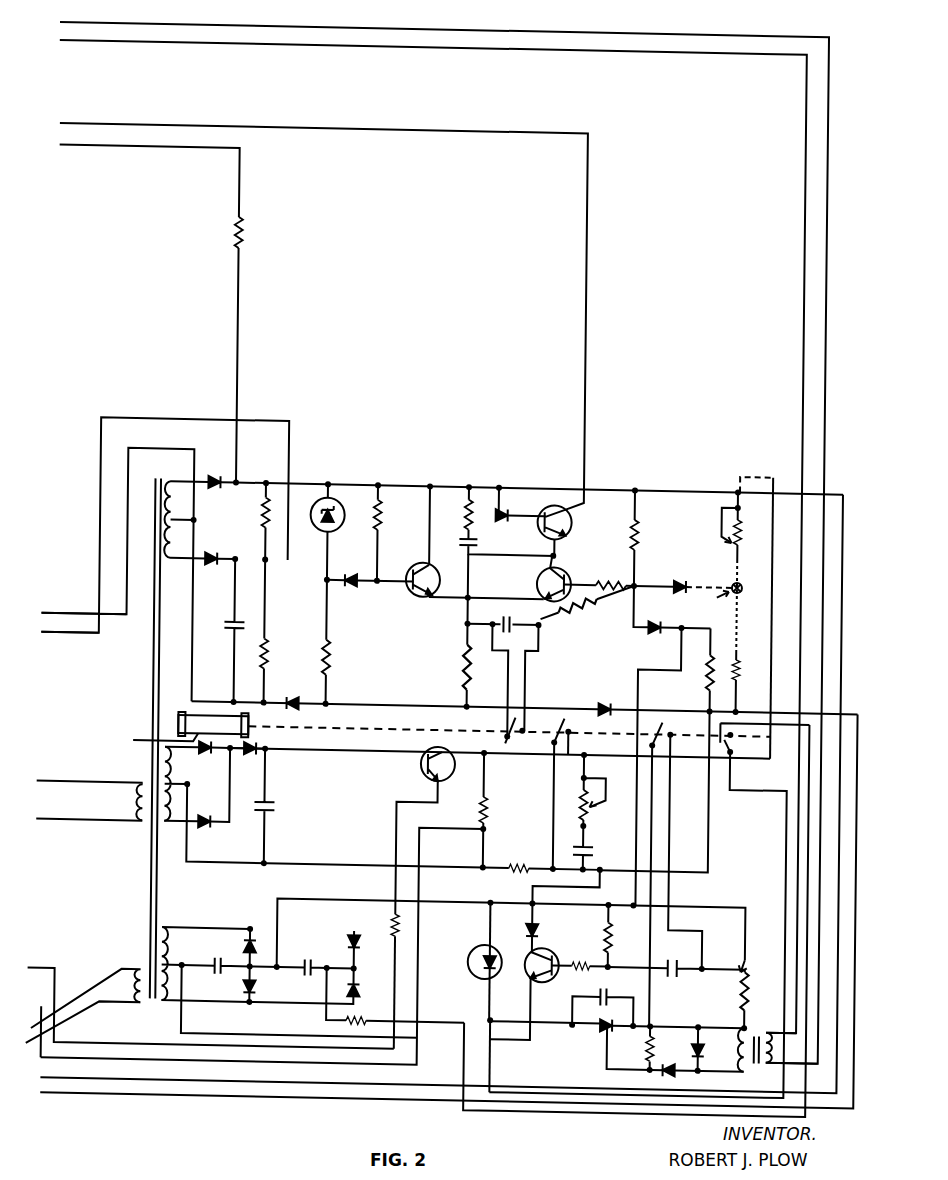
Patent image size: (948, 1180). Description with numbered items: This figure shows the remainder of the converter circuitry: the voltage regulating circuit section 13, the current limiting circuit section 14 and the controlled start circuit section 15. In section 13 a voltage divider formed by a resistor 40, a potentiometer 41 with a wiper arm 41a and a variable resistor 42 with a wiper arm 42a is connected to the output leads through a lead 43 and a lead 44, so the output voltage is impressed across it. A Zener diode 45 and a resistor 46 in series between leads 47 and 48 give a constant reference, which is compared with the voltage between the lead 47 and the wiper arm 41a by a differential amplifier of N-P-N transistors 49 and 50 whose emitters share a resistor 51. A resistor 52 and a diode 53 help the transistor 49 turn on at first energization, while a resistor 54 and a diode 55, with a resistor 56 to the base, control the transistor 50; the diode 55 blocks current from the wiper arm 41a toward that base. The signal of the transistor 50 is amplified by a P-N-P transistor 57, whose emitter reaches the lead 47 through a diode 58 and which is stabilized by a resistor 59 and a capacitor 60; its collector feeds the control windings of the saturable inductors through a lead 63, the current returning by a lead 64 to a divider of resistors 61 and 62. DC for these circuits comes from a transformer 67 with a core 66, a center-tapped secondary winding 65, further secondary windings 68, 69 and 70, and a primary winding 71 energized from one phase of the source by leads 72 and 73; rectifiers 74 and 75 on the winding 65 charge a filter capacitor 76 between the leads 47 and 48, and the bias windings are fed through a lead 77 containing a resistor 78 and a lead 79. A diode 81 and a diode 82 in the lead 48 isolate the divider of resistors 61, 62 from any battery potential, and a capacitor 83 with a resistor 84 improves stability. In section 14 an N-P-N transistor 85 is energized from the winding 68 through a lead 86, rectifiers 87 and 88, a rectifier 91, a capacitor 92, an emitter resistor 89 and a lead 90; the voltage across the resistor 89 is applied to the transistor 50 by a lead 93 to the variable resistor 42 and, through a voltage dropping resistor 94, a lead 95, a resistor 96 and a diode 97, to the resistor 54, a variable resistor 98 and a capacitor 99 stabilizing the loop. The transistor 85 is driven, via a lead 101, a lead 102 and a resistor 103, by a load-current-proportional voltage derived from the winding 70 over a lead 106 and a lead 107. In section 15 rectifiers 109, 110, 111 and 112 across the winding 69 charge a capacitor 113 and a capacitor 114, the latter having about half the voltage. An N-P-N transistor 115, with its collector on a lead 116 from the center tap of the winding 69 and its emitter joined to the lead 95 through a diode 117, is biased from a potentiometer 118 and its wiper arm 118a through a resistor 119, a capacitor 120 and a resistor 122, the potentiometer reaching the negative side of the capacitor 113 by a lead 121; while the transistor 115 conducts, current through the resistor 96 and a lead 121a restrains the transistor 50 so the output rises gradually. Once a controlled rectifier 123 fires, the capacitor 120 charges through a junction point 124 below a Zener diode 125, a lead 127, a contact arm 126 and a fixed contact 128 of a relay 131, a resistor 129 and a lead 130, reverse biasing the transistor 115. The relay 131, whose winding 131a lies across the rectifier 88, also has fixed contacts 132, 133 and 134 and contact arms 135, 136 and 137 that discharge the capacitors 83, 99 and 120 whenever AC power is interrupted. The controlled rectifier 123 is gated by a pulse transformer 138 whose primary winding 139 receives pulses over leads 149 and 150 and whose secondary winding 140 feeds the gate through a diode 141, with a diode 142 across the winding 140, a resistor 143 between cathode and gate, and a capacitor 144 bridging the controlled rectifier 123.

The power supply circuit 13 is at (474, 424).
The control circuit 14 is at (103, 717).
The output circuit 15 is at (93, 921).
The resistor 40 is at (741, 656).
The connection point 41 is at (744, 577).
The wiper arm 41a is at (718, 588).
The potentiometer 42 is at (741, 526).
The wiper 42a is at (720, 513).
The supply line 43 is at (844, 482).
The supply line 44 is at (858, 700).
The zener diode 45 is at (339, 499).
The resistor 46 is at (332, 655).
The positive bus 47 is at (396, 482).
The negative bus 48 is at (200, 606).
The transistor 49 is at (416, 597).
The transistor 50 is at (572, 566).
The resistor 51 is at (466, 656).
The resistor 52 is at (381, 515).
The diode 53 is at (357, 572).
The resistor 54 is at (640, 526).
The diode 55 is at (684, 572).
The resistor 56 is at (634, 572).
The transistor 57 is at (568, 500).
The diode 58 is at (514, 505).
The resistor 59 is at (462, 485).
The capacitor 60 is at (464, 546).
The resistor 61 is at (270, 500).
The resistor 62 is at (270, 646).
The conductor 63 is at (584, 302).
The conductor 64 is at (84, 636).
The secondary winding 65 is at (178, 510).
The transformer core 66 is at (158, 478).
The transformer 67 is at (156, 397).
The secondary winding 68 is at (164, 777).
The secondary winding 69 is at (162, 936).
The primary winding 70 is at (143, 805).
The primary winding 71 is at (143, 985).
The conductor 72 is at (62, 973).
The conductor 73 is at (96, 1010).
The diode 74 is at (213, 476).
The diode 75 is at (211, 566).
The capacitor 76 is at (233, 632).
The conductor 77 is at (236, 180).
The resistor 78 is at (239, 230).
The conductor 79 is at (56, 616).
The diode 81 is at (605, 696).
The diode 82 is at (296, 696).
The capacitor 83 is at (536, 624).
The resistor 84 is at (580, 608).
The transistor 85 is at (447, 777).
The conductor 86 is at (338, 750).
The diode 87 is at (262, 753).
The diode 88 is at (207, 756).
The resistor 89 is at (493, 798).
The conductor 90 is at (308, 862).
The diode 91 is at (209, 827).
The capacitor 92 is at (281, 806).
The conductor 93 is at (762, 463).
The resistor 94 is at (523, 860).
The conductor 95 is at (716, 863).
The resistor 96 is at (709, 660).
The diode 97 is at (658, 612).
The potentiometer 98 is at (597, 801).
The capacitor 99 is at (593, 843).
The conductor 101 is at (426, 918).
The conductor 102 is at (398, 809).
The resistor 103 is at (397, 921).
The input lead 106 is at (80, 824).
The input lead 107 is at (42, 784).
The diode 109 is at (355, 931).
The diode 110 is at (366, 988).
The conductor 111 is at (230, 1033).
The diode 112 is at (250, 940).
The capacitor 113 is at (313, 975).
The capacitor 114 is at (218, 975).
The transistor 115 is at (553, 947).
The conductor 116 is at (512, 1036).
The diode 117 is at (543, 925).
The potentiometer 118 is at (746, 986).
The wiper 118a is at (747, 950).
The resistor 119 is at (580, 966).
The capacitor 120 is at (677, 970).
The conductor 121 is at (283, 897).
The conductor 121a is at (640, 662).
The resistor 122 is at (615, 926).
The diode 123 is at (607, 1024).
The junction 124 is at (499, 1013).
The lamp 125 is at (473, 958).
The relay contact 126 is at (736, 742).
The conductor 127 is at (770, 780).
The relay contact 128 is at (736, 725).
The resistor 129 is at (346, 1018).
The conductor 130 is at (810, 822).
The relay coil 131 is at (255, 720).
The relay lead 131a is at (136, 742).
The relay contact 132 is at (527, 725).
The relay contact 133 is at (574, 724).
The relay contact 134 is at (676, 726).
The relay contact 135 is at (506, 725).
The relay contact 136 is at (572, 742).
The relay contact 137 is at (650, 722).
The primary winding 138 is at (746, 1021).
The transformer core 139 is at (763, 1024).
The secondary winding 140 is at (766, 1058).
The diode 141 is at (672, 1068).
The diode 142 is at (699, 1032).
The resistor 143 is at (652, 1040).
The capacitor 144 is at (609, 986).
The output line 149 is at (137, 26).
The output line 150 is at (310, 44).